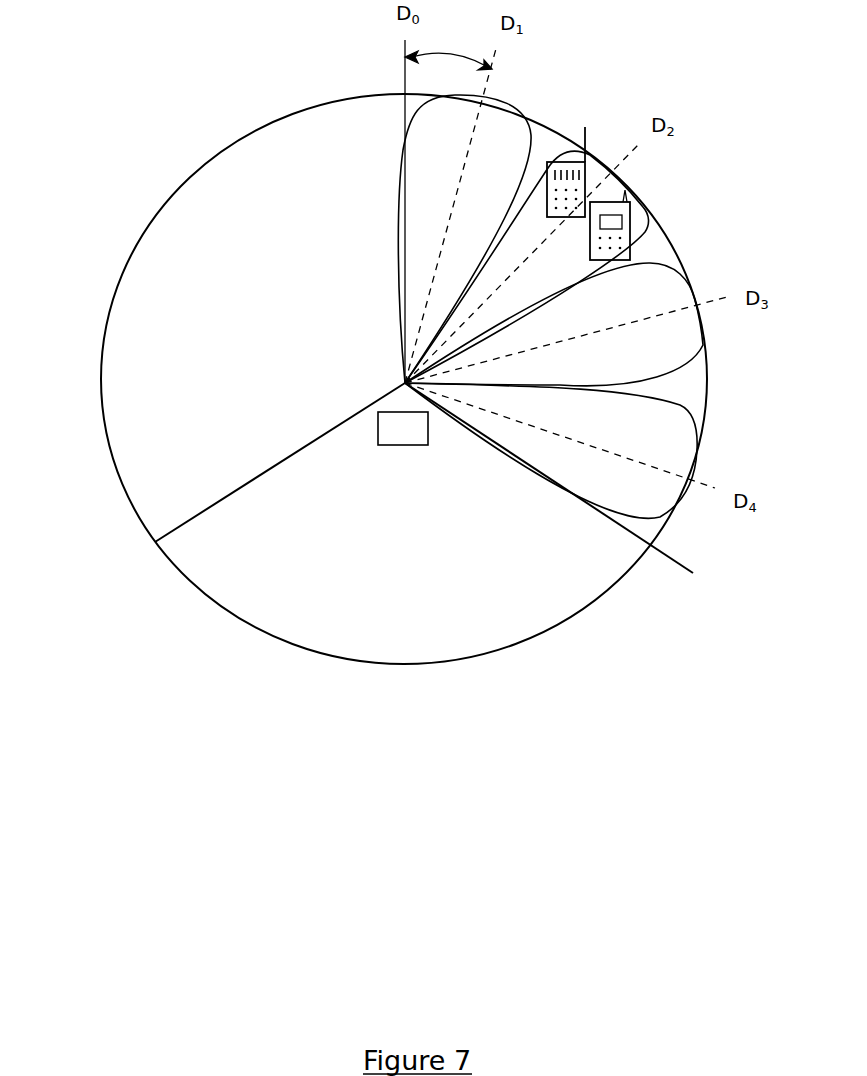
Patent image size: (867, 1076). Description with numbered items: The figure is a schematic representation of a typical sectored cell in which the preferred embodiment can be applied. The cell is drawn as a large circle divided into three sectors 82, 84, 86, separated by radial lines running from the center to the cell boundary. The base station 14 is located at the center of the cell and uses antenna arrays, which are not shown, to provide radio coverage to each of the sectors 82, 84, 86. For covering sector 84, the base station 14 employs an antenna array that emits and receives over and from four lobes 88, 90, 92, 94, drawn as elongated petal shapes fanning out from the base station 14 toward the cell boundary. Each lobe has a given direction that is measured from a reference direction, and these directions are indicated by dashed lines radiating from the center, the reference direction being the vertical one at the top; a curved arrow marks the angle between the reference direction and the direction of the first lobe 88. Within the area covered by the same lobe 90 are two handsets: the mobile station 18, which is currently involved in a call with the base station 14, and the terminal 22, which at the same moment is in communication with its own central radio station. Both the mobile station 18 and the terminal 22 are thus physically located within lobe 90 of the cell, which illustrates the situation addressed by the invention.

The sector 82 is at (122, 369).
The sector 84 is at (689, 400).
The sector 86 is at (443, 638).
The lobe 88 is at (514, 110).
The lobe 90 is at (649, 214).
The lobe 92 is at (694, 286).
The lobe 94 is at (700, 455).
The terminal 22 is at (588, 166).
The mobile station 18 is at (632, 201).
The base station 14 is at (401, 447).